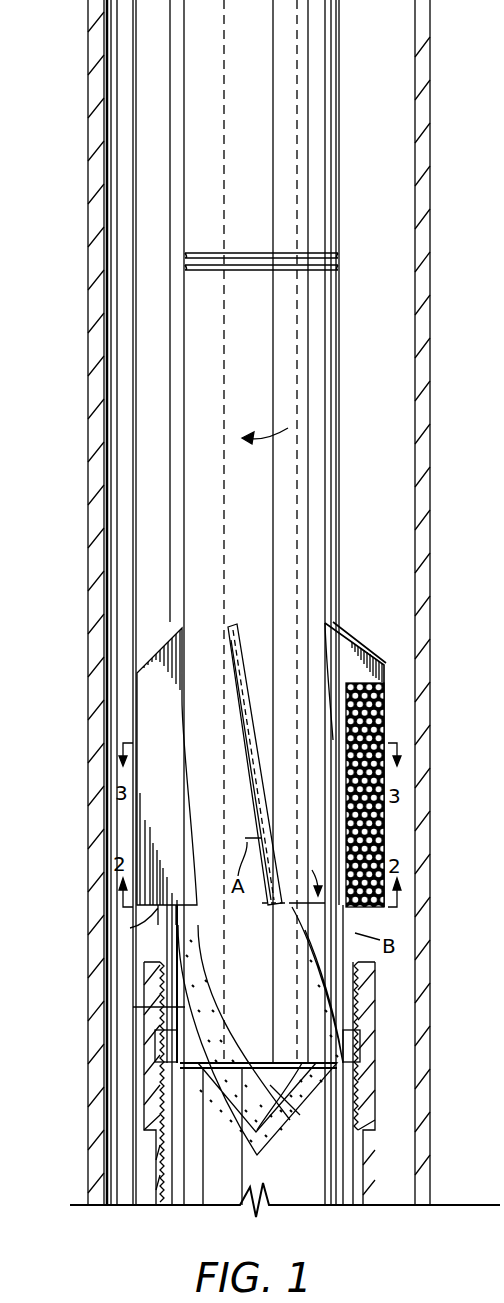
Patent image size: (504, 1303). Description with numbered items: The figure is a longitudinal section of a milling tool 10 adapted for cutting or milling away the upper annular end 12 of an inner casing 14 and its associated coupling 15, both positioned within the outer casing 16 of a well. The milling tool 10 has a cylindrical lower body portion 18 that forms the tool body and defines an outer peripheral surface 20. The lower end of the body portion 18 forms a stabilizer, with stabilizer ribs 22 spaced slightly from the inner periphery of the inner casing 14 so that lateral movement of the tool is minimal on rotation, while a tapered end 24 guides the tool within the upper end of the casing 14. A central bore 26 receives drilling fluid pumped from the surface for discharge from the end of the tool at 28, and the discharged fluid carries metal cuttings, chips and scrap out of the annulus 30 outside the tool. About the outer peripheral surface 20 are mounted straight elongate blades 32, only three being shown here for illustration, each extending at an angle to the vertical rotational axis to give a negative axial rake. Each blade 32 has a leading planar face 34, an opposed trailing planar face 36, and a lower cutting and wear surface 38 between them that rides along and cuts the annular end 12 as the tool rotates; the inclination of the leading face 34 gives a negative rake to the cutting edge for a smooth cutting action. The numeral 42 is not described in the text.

The milling tool 10 is at (388, 420).
The annular end 12 is at (180, 912).
The inner casing 14 is at (157, 945).
The coupling 15 is at (372, 1118).
The outer casing 16 is at (98, 492).
The lower body portion 18 is at (310, 657).
The outer peripheral surface 20 is at (206, 640).
The stabilizer ribs 22 is at (193, 1000).
The tapered end 24 is at (317, 1105).
The central bore 26 is at (293, 142).
The discharge end 28 is at (293, 1108).
The annulus 30 is at (387, 300).
The blades 32 is at (385, 665).
The leading planar face 34 is at (385, 710).
The trailing planar face 36 is at (247, 672).
The lower cutting and wear surface 38 is at (195, 930).
The friction pad 42 is at (385, 832).